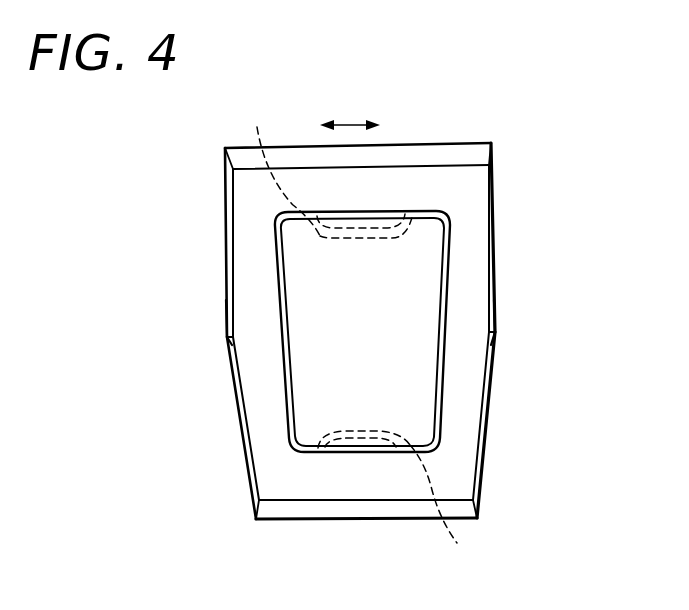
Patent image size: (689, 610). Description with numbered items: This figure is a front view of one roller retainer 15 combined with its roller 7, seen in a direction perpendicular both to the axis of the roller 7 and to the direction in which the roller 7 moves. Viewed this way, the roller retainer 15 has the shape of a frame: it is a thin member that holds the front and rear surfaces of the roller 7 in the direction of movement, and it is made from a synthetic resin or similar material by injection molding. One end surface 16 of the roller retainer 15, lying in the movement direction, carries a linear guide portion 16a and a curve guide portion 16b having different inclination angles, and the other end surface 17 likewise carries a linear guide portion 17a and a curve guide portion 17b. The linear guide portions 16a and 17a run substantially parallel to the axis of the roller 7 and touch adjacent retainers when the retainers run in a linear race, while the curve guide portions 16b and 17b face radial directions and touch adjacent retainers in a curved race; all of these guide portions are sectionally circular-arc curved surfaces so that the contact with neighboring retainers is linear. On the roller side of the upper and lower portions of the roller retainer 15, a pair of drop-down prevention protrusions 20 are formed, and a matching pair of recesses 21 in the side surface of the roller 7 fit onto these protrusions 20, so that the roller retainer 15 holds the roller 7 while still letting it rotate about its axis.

The roller 7 is at (425, 245).
The roller retainer 15 is at (360, 182).
The end surface 16 is at (228, 298).
The linear guide portion 16a is at (226, 234).
The curve guide portion 16b is at (242, 416).
The other end surface 17 is at (497, 300).
The linear guide portion 17a is at (495, 243).
The curve guide portion 17b is at (488, 425).
The drop-down prevention protrusion 20 is at (380, 213).
The recess 21 is at (362, 338).